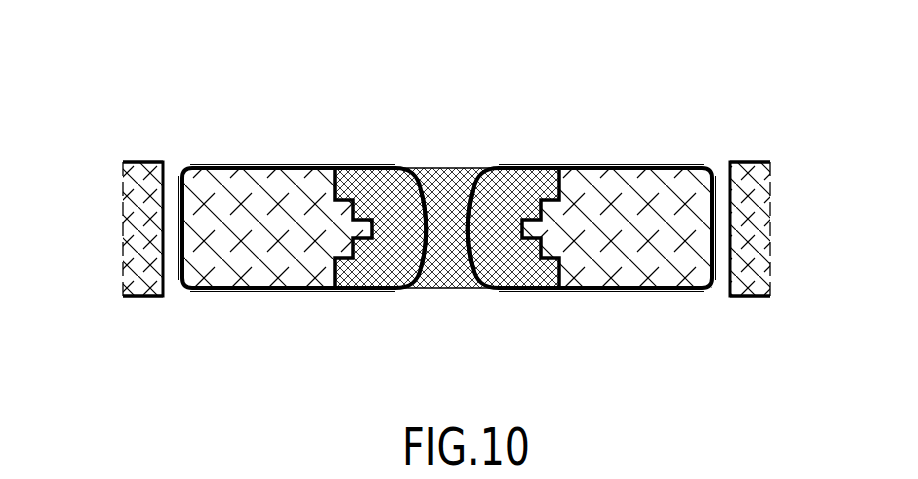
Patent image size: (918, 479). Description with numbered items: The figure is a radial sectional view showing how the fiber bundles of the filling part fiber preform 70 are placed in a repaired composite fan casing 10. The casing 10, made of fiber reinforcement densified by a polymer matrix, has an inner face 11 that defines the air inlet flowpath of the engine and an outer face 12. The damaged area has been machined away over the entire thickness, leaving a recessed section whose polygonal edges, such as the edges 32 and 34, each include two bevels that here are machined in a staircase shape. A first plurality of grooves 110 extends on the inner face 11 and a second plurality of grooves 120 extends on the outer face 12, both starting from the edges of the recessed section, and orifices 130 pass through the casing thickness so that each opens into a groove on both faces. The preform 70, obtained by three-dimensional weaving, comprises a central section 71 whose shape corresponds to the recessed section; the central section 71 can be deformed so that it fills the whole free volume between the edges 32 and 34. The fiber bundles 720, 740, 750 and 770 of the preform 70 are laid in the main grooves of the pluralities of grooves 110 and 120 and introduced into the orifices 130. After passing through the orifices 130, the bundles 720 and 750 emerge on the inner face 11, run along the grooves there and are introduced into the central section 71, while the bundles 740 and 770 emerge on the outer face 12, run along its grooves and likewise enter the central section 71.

The fan casing 10 is at (138, 228).
The inner face 11 is at (140, 297).
The outer face 12 is at (147, 162).
The edge 32 is at (374, 166).
The edge 34 is at (548, 166).
The fiber preform 70 is at (448, 156).
The central section 71 is at (437, 166).
The first plurality of grooves 110 is at (283, 310).
The second plurality of grooves 120 is at (310, 150).
The orifices 130 is at (172, 175).
The fiber bundle 720 is at (246, 167).
The fiber bundle 740 is at (217, 290).
The fiber bundle 750 is at (663, 167).
The fiber bundle 770 is at (681, 290).